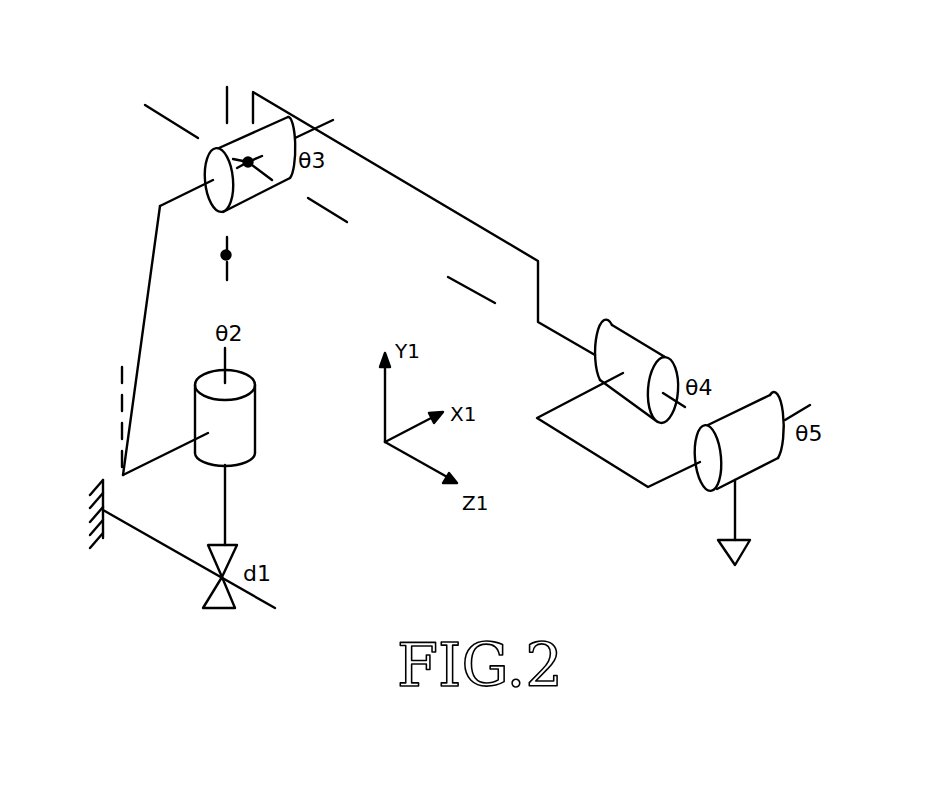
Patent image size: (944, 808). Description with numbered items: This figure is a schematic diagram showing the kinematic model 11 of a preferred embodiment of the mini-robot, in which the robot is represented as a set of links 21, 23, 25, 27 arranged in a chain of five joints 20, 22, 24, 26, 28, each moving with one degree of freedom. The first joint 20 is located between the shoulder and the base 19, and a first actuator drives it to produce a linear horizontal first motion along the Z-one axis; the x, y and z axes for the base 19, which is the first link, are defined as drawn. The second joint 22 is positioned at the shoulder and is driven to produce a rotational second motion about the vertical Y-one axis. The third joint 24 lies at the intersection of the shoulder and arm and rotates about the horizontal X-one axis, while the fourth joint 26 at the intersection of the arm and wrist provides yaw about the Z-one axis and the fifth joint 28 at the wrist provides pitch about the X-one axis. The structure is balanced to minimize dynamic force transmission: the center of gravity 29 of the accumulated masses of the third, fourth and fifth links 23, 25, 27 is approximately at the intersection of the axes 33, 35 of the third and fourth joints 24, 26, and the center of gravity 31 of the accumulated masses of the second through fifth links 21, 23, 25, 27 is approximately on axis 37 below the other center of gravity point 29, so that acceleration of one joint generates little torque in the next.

The kinematic model 11 is at (608, 207).
The base 19 is at (140, 528).
The first joint 20 is at (218, 577).
The second link 21 is at (227, 510).
The second joint 22 is at (255, 440).
The third link 23 is at (150, 280).
The third joint 24 is at (262, 193).
The fourth link 25 is at (432, 197).
The fourth joint 26 is at (640, 343).
The fifth link 27 is at (608, 467).
The fifth joint 28 is at (757, 393).
The center of gravity 29 is at (250, 160).
The center of gravity 31 is at (229, 254).
The axis of the third joint 33 is at (177, 197).
The axis of the fourth joint 35 is at (160, 115).
The axis 37 is at (228, 277).